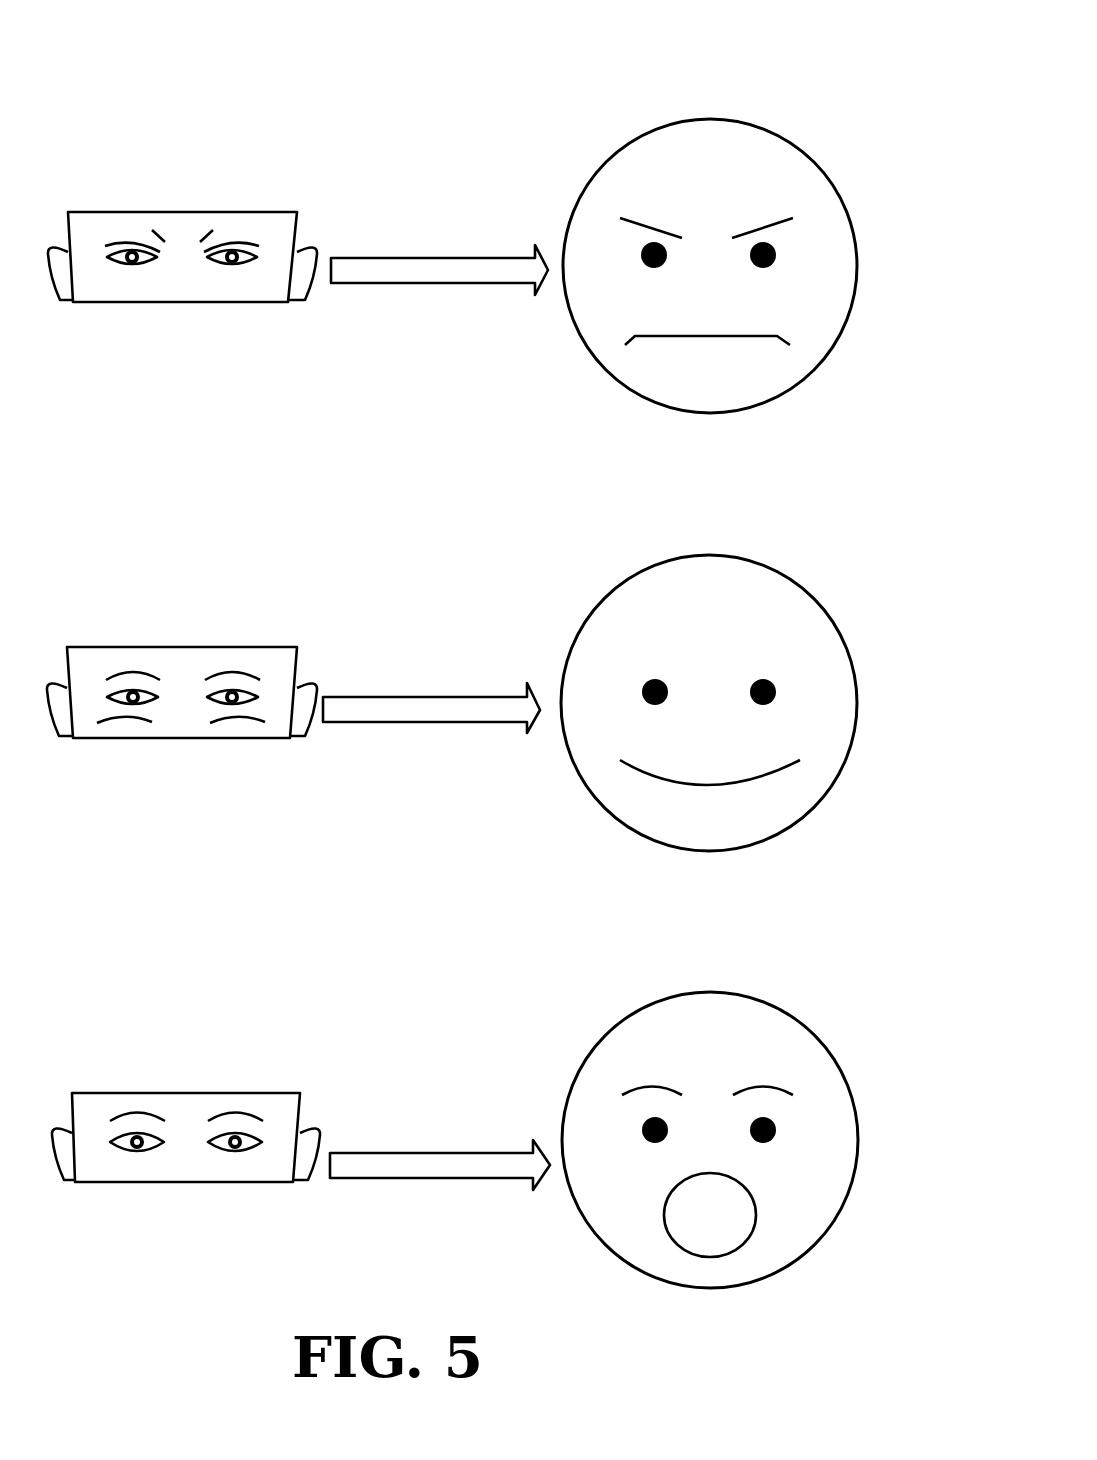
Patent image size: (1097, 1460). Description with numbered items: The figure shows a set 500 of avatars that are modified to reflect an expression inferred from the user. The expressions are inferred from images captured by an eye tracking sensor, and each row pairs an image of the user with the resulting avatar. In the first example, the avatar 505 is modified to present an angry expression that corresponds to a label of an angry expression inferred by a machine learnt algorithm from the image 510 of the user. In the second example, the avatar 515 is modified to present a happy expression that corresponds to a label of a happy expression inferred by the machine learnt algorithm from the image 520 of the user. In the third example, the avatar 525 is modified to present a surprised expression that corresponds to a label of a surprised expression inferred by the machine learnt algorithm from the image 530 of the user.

The set of avatars 500 is at (858, 60).
The avatar 505 is at (709, 86).
The image of the user 510 is at (182, 172).
The avatar 515 is at (709, 524).
The image of the user 520 is at (182, 608).
The avatar 525 is at (709, 966).
The image of the user 530 is at (182, 1054).